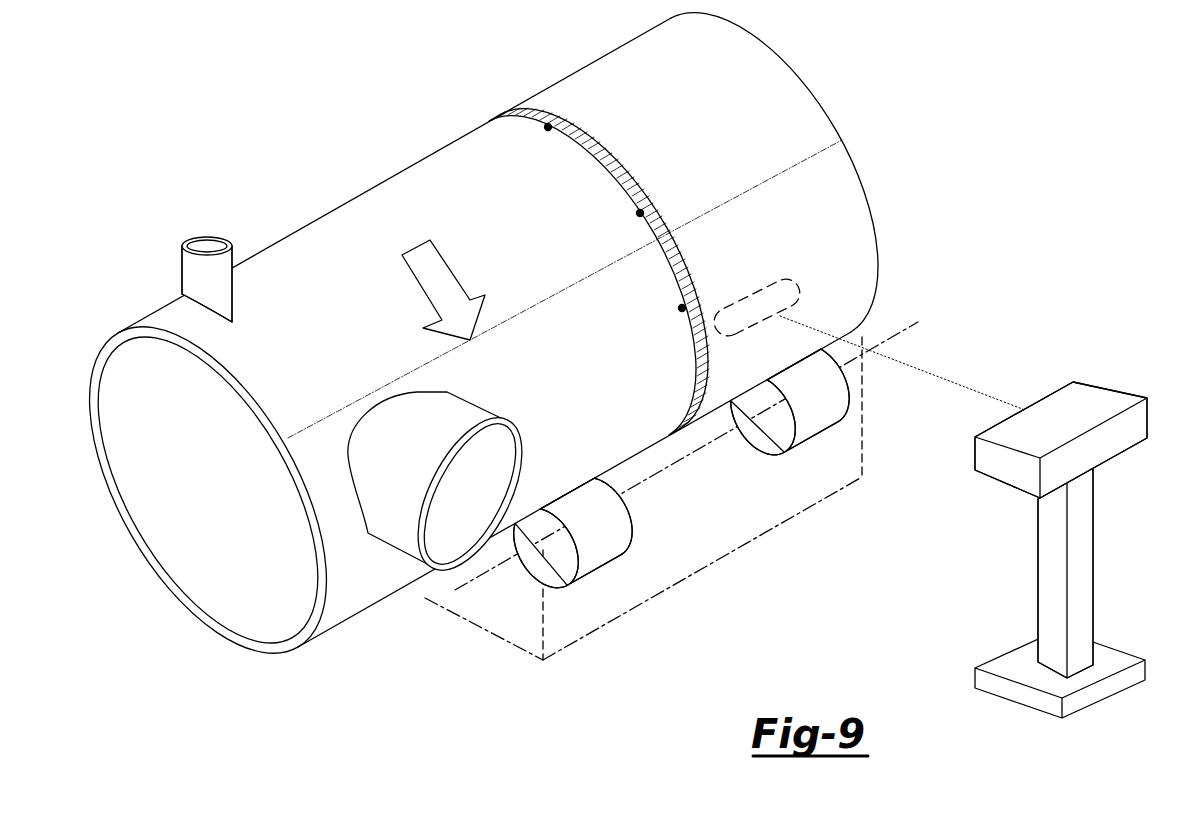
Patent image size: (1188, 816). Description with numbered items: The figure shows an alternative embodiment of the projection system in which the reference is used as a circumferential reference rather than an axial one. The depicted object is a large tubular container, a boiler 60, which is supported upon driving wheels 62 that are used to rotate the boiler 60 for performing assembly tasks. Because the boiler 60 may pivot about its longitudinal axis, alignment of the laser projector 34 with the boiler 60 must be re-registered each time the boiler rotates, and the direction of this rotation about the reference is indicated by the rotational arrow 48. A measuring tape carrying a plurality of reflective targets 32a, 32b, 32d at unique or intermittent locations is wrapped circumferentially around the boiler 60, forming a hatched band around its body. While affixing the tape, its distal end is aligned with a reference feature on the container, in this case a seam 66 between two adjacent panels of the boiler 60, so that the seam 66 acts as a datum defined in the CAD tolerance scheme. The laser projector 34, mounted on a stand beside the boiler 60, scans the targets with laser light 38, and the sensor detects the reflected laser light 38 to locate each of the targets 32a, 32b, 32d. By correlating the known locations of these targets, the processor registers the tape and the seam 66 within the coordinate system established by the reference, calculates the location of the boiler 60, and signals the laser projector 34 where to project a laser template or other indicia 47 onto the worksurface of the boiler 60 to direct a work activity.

The boiler 60 is at (423, 160).
The seam 66 is at (497, 328).
The rotational arrow 48 is at (418, 280).
The reflective target 32a is at (638, 214).
The reflective target 32b is at (547, 129).
The reflective target 32d is at (682, 310).
The laser indicia 47 is at (758, 285).
The laser light 38 is at (946, 379).
The driving wheels 62 is at (745, 447).
The laser projector 34 is at (1085, 403).